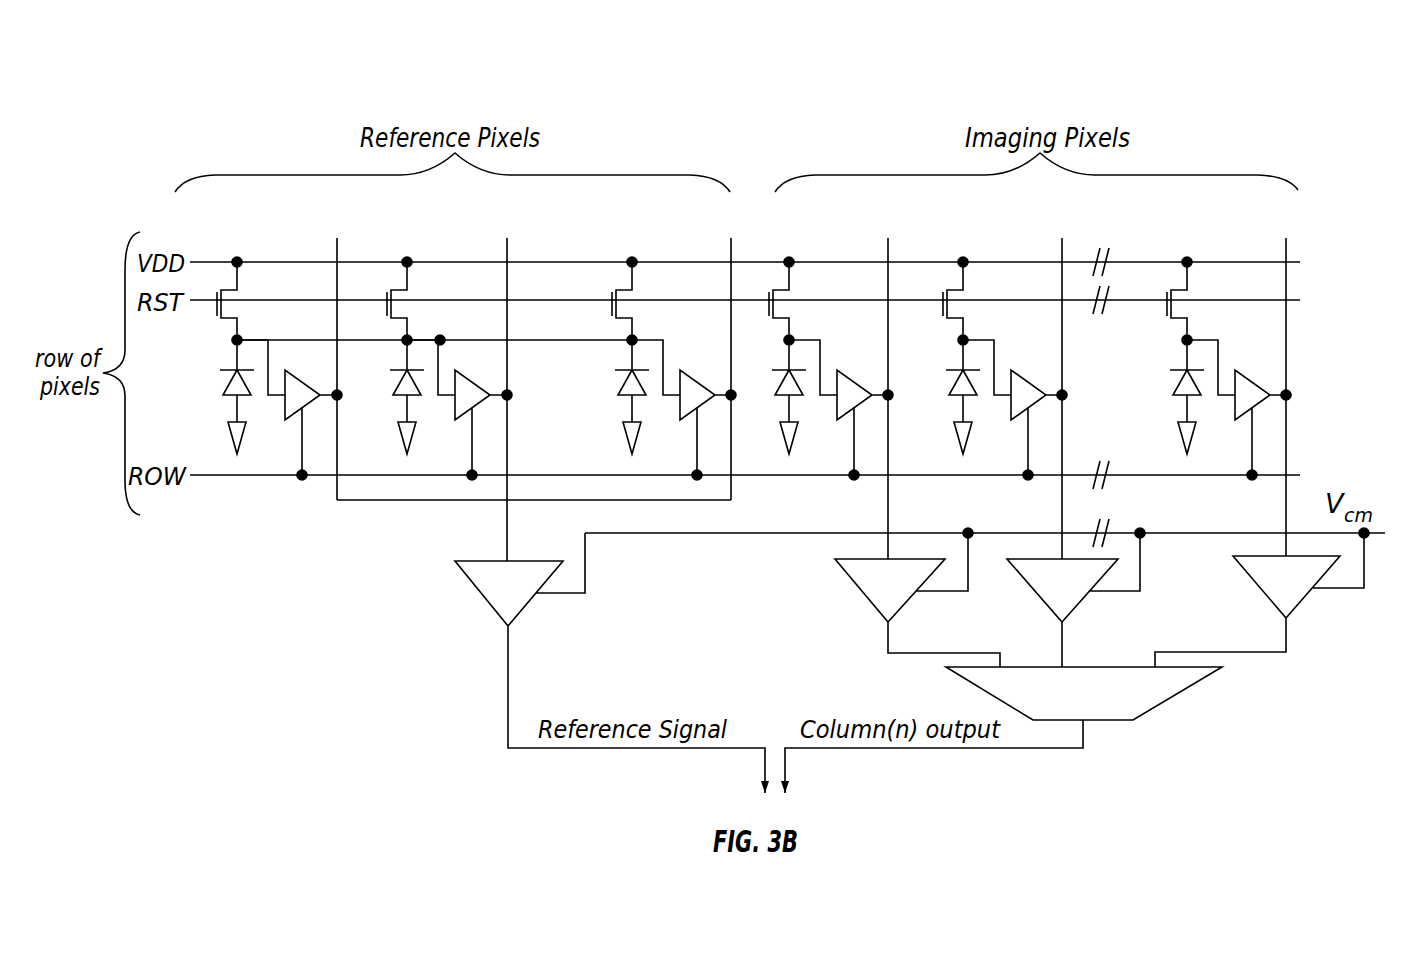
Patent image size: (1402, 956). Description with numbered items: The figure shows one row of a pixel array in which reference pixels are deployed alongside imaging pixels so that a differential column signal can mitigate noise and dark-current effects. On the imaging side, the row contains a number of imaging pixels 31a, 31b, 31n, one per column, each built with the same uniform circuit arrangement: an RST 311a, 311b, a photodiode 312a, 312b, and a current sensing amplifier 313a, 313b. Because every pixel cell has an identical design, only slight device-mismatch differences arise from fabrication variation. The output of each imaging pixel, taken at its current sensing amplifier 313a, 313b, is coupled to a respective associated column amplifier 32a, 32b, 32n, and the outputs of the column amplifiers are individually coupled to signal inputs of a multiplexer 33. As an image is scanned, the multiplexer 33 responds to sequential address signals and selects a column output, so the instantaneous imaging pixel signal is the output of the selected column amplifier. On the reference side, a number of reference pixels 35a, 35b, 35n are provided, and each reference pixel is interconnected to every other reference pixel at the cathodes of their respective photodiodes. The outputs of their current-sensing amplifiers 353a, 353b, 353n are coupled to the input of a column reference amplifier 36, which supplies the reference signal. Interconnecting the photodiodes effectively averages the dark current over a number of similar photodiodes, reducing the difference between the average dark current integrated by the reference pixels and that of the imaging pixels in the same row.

The reference pixel 35a is at (279, 336).
The reference pixel 35b is at (449, 336).
The reference pixel 35n is at (674, 336).
The imaging pixel 31a is at (814, 336).
The imaging pixel 31b is at (980, 336).
The imaging pixel 31n is at (1191, 257).
The RST 311a is at (792, 272).
The RST 311b is at (966, 272).
The photodiode 312a is at (789, 415).
The photodiode 312b is at (963, 430).
The current sensing amplifier 313a is at (859, 387).
The current sensing amplifier 313b is at (1032, 386).
The current-sensing amplifier 353a is at (309, 388).
The current-sensing amplifier 353b is at (479, 388).
The current-sensing amplifier 353n is at (704, 387).
The column reference amplifier 36 is at (490, 607).
The column amplifier 32a is at (910, 603).
The column amplifier 32b is at (1082, 603).
The column amplifier 32n is at (1305, 600).
The multiplexer 33 is at (1137, 722).